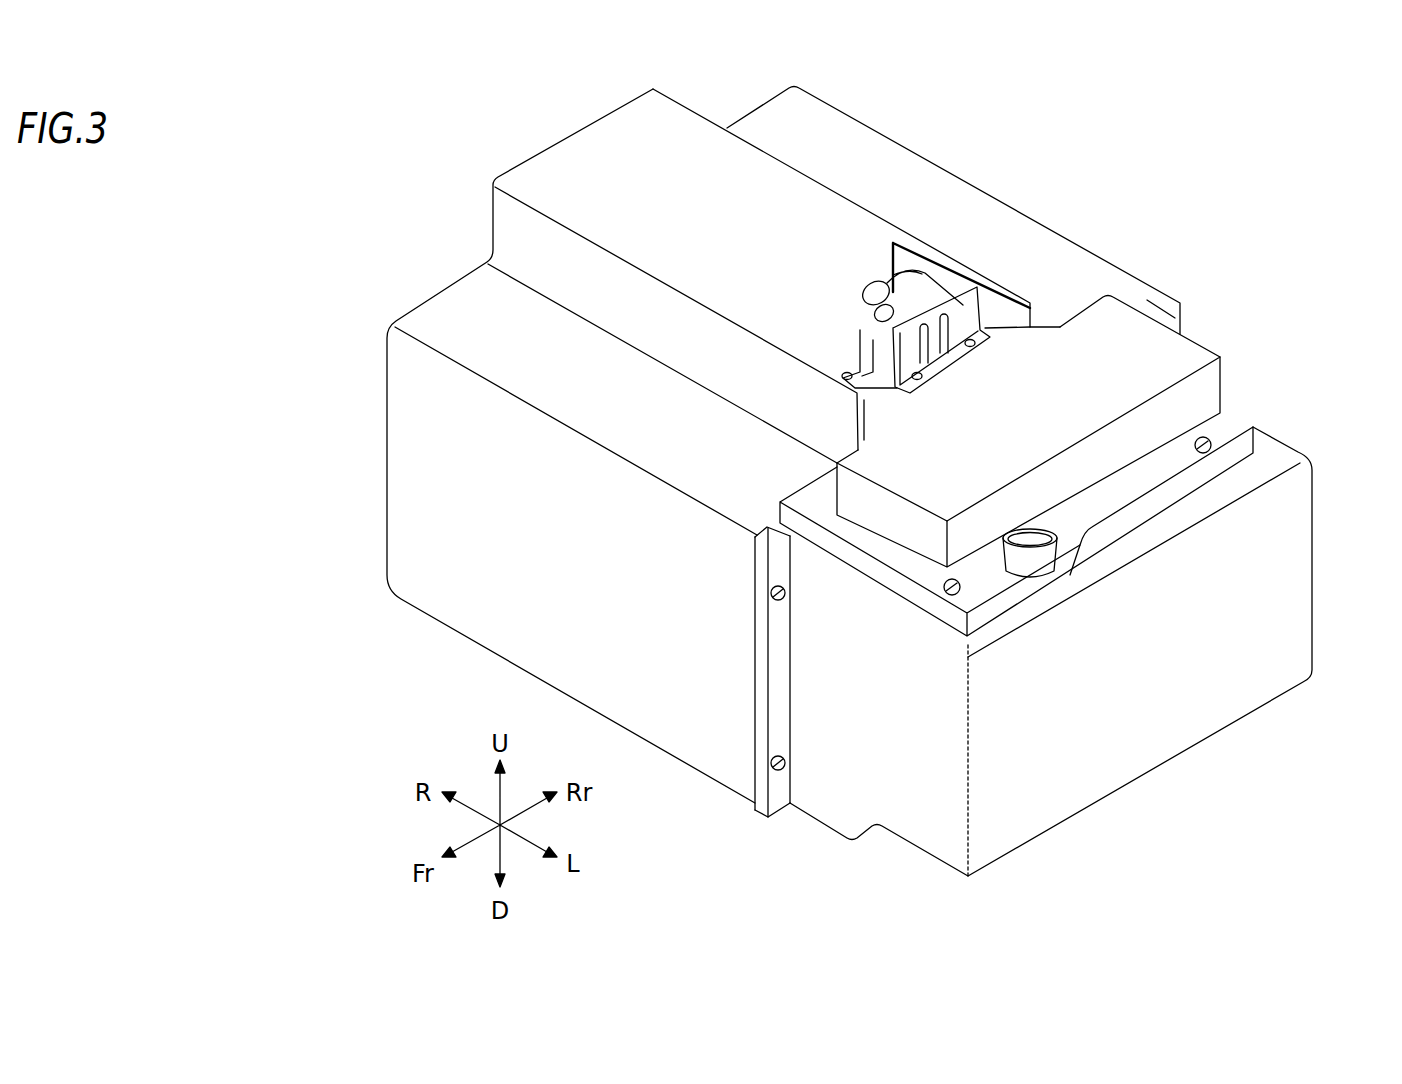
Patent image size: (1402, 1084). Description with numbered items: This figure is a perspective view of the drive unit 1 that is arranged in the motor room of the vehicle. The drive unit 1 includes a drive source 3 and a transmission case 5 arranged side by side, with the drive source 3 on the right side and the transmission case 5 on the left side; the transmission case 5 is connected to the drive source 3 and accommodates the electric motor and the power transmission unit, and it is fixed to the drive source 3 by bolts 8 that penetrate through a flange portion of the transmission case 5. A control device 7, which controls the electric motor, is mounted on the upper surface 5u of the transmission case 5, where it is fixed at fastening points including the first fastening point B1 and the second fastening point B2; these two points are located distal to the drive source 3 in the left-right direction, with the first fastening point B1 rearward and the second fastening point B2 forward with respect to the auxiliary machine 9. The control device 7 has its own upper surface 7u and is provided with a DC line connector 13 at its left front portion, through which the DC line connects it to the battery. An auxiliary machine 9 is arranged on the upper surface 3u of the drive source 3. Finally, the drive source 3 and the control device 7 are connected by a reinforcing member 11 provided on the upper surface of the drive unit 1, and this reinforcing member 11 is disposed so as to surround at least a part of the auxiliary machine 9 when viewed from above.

The drive unit 1 is at (1171, 193).
The drive source 3 is at (386, 540).
The upper surface of the drive source 3u is at (790, 194).
The transmission case 5 is at (1312, 567).
The upper surface of the transmission case 5u is at (1193, 503).
The control device 7 is at (1224, 370).
The upper surface of the control device 7u is at (1097, 371).
The bolts 8 is at (767, 597).
The auxiliary machine 9 is at (870, 284).
The reinforcing member 11 is at (967, 310).
The DC line connector 13 is at (1017, 560).
The first fastening point B1 is at (1210, 440).
The second fastening point B2 is at (947, 590).